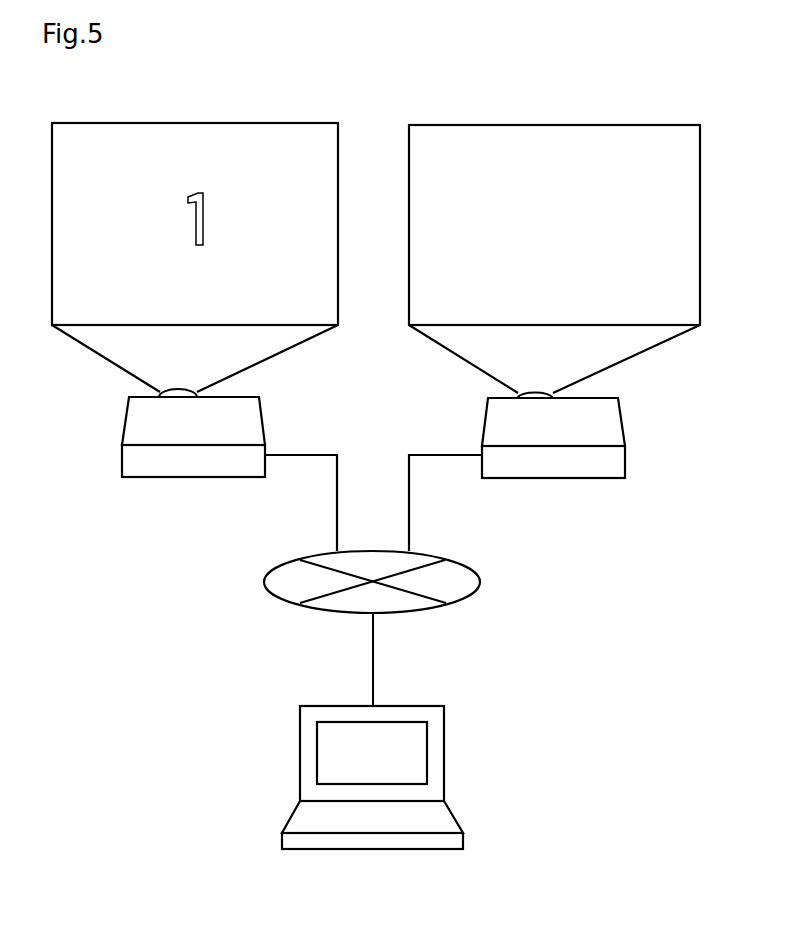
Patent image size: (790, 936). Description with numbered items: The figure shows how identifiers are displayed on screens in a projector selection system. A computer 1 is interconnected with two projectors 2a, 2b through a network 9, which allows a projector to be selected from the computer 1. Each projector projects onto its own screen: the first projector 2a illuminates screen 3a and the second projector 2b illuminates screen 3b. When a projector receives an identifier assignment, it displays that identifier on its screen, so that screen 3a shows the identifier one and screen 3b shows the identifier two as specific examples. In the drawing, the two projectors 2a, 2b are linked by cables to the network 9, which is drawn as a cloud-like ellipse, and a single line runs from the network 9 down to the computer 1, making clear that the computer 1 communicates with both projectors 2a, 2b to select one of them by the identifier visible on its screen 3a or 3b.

The computer 1 is at (444, 740).
The projector 2a is at (267, 412).
The projector 2b is at (628, 412).
The screen 3a is at (338, 141).
The screen 3b is at (700, 146).
The network 9 is at (481, 584).